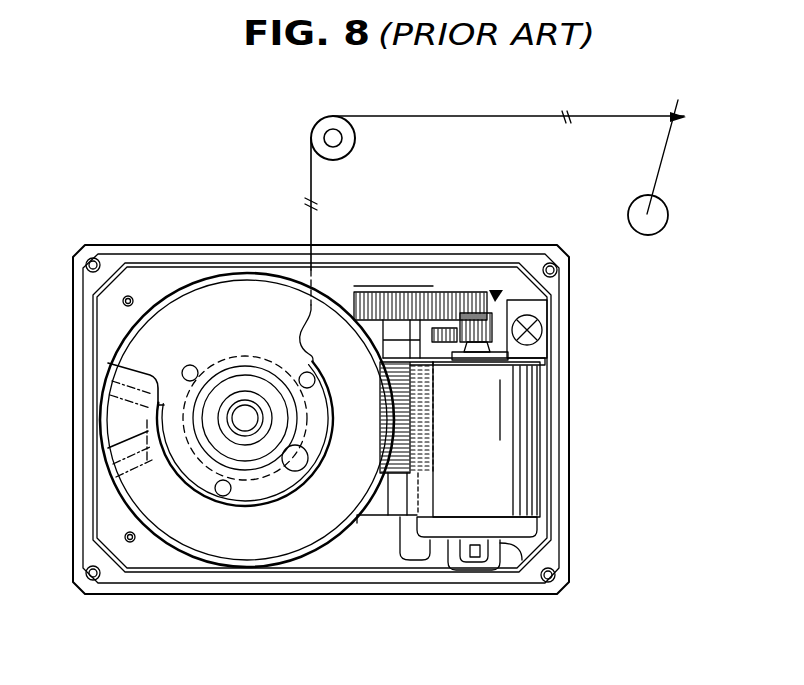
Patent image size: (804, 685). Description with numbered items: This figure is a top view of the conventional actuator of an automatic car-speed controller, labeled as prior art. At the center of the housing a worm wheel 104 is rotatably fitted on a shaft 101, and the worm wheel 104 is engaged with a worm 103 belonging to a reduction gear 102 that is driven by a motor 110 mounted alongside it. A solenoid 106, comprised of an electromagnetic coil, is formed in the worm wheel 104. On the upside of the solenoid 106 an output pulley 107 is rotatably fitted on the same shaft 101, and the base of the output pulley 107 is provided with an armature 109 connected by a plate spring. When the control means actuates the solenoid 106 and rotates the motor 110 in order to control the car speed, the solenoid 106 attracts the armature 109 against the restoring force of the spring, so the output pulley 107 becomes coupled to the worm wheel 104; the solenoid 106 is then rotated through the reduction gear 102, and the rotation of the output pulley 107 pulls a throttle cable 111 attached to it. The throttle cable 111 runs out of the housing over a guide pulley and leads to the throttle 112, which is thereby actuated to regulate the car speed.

The shaft 101 is at (246, 410).
The reduction gear 102 is at (496, 290).
The worm 103 is at (388, 475).
The worm wheel 104 is at (312, 549).
The solenoid 106 is at (167, 546).
The output pulley 107 is at (137, 346).
The armature 109 is at (236, 550).
The motor 110 is at (528, 417).
The throttle cable 111 is at (417, 119).
The throttle 112 is at (661, 229).